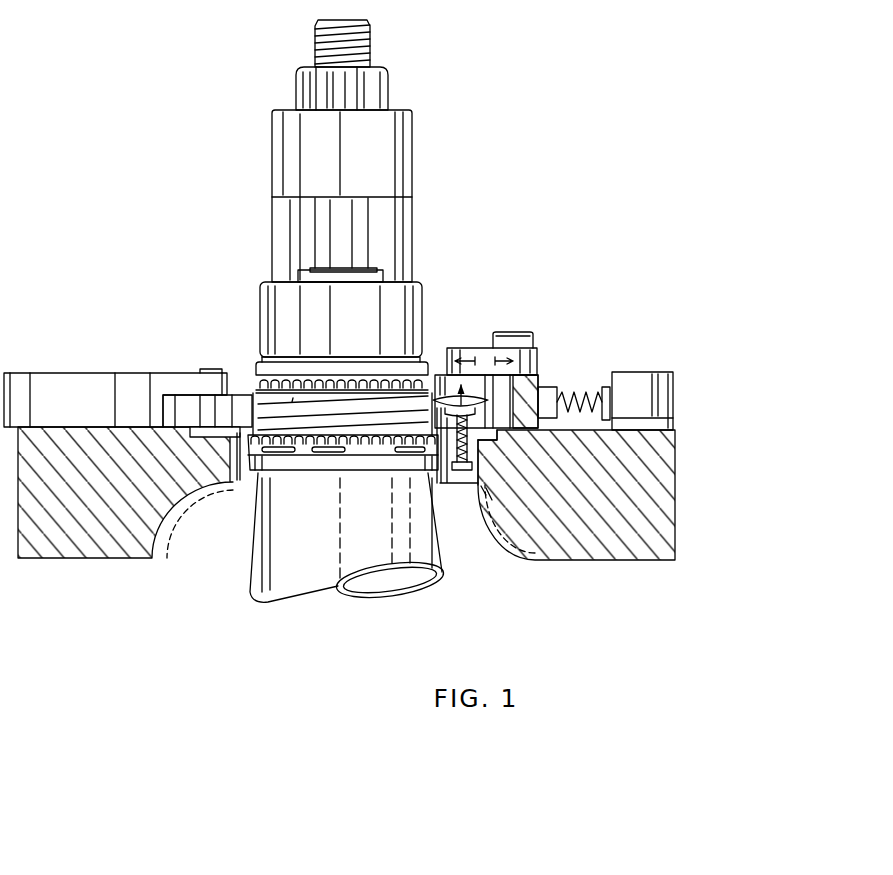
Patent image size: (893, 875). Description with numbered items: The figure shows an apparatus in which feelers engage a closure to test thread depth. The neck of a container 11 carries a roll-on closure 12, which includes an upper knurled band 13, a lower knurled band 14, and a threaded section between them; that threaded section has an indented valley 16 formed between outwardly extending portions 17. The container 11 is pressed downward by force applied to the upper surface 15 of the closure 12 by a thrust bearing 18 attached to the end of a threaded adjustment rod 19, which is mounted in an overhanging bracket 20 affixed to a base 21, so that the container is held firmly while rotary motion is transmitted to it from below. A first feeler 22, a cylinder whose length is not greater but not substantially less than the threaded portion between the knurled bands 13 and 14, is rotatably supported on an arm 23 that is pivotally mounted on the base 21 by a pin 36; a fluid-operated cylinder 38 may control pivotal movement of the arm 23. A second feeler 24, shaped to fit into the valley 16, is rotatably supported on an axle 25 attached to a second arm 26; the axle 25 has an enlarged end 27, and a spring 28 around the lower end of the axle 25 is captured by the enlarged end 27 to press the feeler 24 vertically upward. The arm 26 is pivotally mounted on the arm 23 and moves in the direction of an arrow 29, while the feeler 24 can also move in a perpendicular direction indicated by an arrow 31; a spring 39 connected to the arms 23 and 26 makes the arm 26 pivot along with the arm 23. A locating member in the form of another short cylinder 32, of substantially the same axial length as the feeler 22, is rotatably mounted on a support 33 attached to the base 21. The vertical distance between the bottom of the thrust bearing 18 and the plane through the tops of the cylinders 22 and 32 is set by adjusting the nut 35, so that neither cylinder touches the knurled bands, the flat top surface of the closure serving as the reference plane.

The container 11 is at (248, 587).
The roll-on closure 12 is at (249, 366).
The upper knurled band 13 is at (257, 382).
The lower knurled band 14 is at (245, 477).
The upper surface 15 is at (290, 352).
The valley 16 is at (321, 413).
The outwardly extending portions 17 is at (293, 400).
The thrust bearing 18 is at (260, 298).
The threaded adjustment rod 19 is at (368, 232).
The overhanging bracket 20 is at (412, 160).
The base 21 is at (70, 560).
The first feeler 22 is at (475, 485).
The arm 23 is at (540, 378).
The second feeler 24 is at (440, 398).
The axle 25 is at (472, 447).
The second arm 26 is at (537, 345).
The enlarged end 27 is at (482, 490).
The spring 28 is at (488, 492).
The arrow 29 is at (474, 395).
The arrow 31 is at (462, 378).
The short cylinder 32 is at (163, 407).
The support 33 is at (42, 375).
The nut 35 is at (388, 88).
The pin 36 is at (518, 332).
The fluid-operated cylinder 38 is at (677, 382).
The spring 39 is at (583, 400).